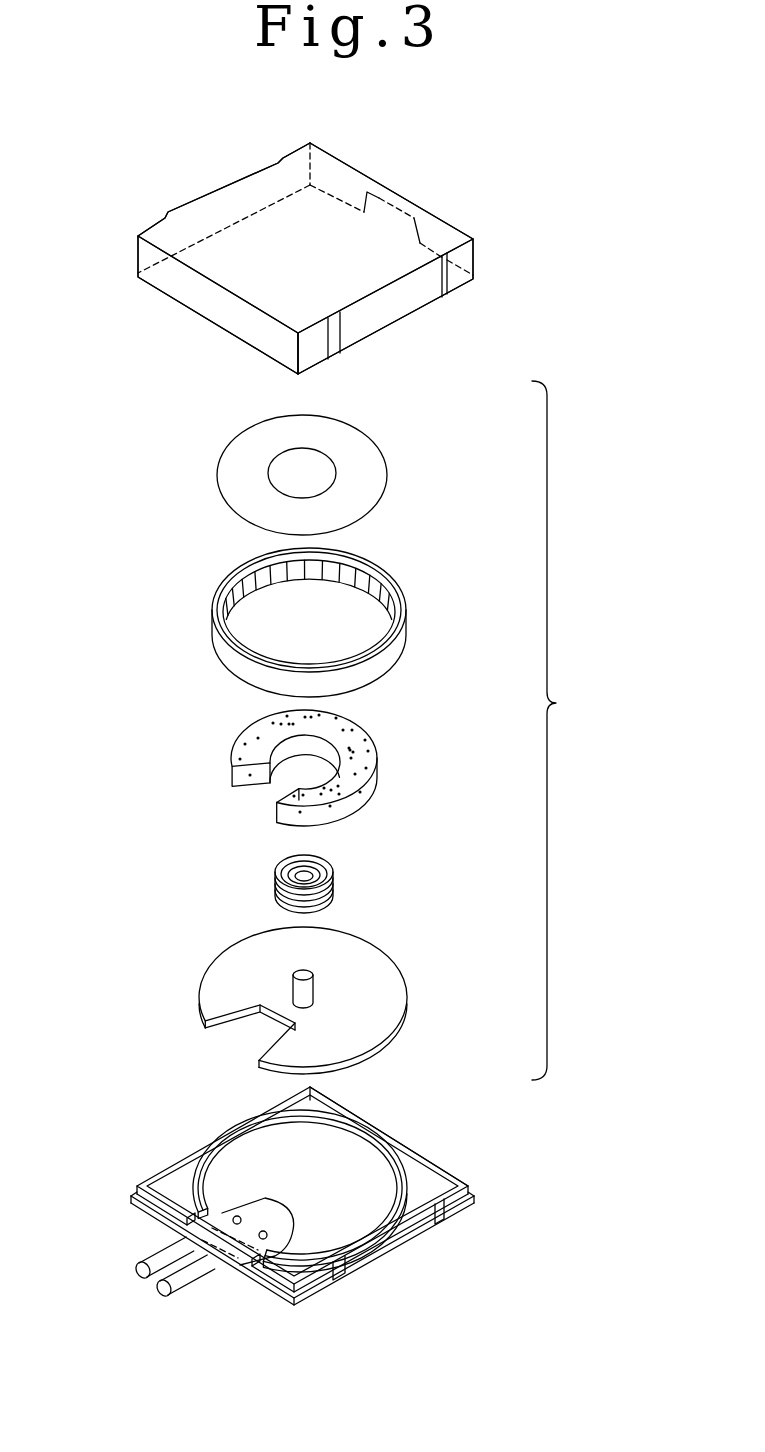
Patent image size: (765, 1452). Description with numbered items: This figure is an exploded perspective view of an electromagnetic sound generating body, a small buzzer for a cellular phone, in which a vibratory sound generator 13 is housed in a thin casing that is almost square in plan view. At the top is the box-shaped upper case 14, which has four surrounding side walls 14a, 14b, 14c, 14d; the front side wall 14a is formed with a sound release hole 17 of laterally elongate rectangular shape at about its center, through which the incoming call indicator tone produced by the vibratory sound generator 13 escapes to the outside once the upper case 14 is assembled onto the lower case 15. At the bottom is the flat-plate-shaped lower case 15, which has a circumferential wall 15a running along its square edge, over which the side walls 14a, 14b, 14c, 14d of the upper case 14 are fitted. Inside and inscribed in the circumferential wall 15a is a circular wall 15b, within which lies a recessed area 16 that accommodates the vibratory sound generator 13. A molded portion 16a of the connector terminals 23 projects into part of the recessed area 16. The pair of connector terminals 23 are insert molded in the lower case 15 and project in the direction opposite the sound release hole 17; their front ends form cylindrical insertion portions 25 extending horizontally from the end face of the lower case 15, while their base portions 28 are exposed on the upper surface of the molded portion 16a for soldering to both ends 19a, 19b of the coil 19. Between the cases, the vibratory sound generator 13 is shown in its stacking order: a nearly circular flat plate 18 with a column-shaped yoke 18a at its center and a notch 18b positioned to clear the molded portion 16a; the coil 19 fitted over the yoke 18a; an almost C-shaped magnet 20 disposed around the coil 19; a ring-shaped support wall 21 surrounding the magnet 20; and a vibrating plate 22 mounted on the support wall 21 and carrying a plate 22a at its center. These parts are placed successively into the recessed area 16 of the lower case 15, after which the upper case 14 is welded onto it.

The vibratory sound generator 13 is at (565, 730).
The upper case 14 is at (353, 160).
The front side wall 14a is at (448, 227).
The side wall 14b is at (405, 308).
The side wall 14c is at (227, 315).
The side wall 14d is at (240, 190).
The sound release hole 17 is at (368, 203).
The vibrating plate 22 is at (373, 485).
The plate 22a is at (315, 465).
The ring-shaped support wall 21 is at (396, 637).
The C-shaped magnet 20 is at (367, 767).
The coil 19 is at (287, 872).
The coil end 19a is at (270, 880).
The coil end 19b is at (273, 887).
The flat plate 18 is at (299, 989).
The yoke 18a is at (315, 993).
The notch 18b is at (230, 1030).
The lower case 15 is at (342, 1186).
The circumferential wall 15a is at (422, 1152).
The circular wall 15b is at (353, 1130).
The recessed area 16 is at (213, 1180).
The molded portion 16a is at (281, 1207).
The base portions 28 is at (238, 1216).
The insertion portions 25 is at (147, 1255).
The connector terminals 23 is at (155, 1272).